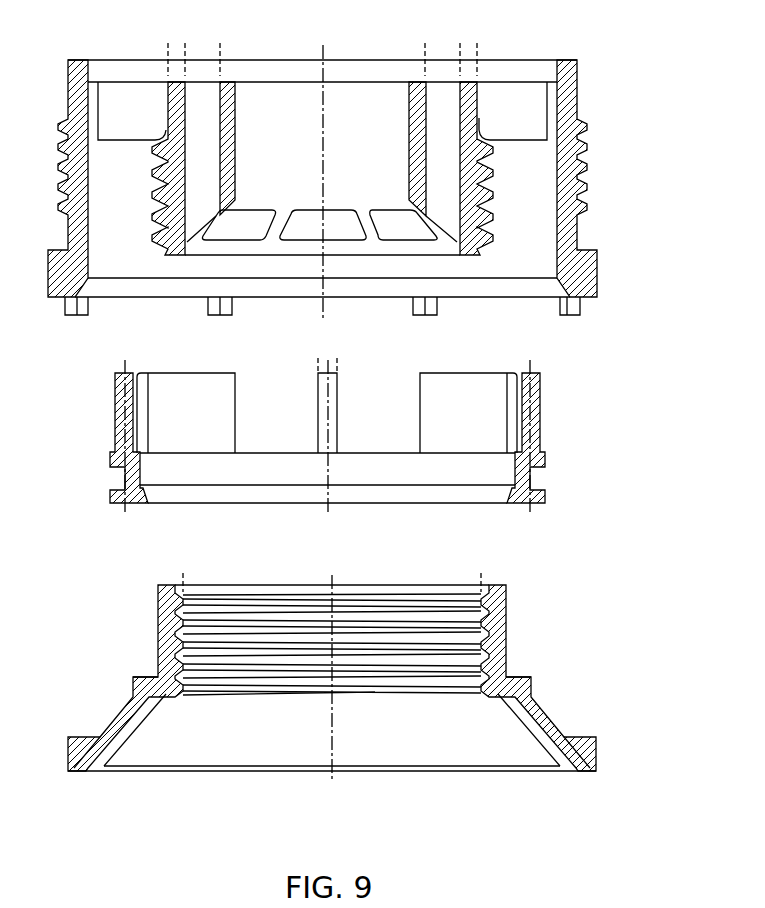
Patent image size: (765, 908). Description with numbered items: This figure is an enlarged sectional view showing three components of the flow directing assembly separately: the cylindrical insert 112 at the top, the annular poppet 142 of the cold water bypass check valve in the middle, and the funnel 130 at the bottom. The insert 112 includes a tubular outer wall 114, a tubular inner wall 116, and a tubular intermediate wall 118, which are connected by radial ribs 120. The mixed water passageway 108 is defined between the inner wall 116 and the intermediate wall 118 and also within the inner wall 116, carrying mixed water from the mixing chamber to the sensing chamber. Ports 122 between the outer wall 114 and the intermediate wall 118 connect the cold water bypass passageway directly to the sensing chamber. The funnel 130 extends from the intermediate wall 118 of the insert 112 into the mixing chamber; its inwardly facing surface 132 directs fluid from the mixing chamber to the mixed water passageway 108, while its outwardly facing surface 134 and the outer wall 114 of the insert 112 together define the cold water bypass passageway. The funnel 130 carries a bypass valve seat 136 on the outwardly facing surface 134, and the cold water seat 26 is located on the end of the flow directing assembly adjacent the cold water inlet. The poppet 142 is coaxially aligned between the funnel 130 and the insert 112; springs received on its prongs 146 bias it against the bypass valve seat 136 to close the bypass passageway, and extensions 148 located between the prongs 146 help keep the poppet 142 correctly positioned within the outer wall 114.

The cold water seat 26 is at (130, 775).
The mixed water passageway 108 is at (300, 227).
The cylindrical insert 112 is at (597, 228).
The tubular outer wall 114 is at (578, 62).
The tubular inner wall 116 is at (409, 122).
The tubular intermediate wall 118 is at (479, 130).
The radial ribs 120 is at (522, 134).
The ports 122 is at (511, 88).
The funnel 130 is at (493, 783).
The inwardly facing surface 132 is at (521, 713).
The outwardly facing surface 134 is at (561, 720).
The bypass valve seat 136 is at (521, 677).
The poppet 142 is at (560, 430).
The prongs 146 is at (542, 392).
The extensions 148 is at (467, 388).